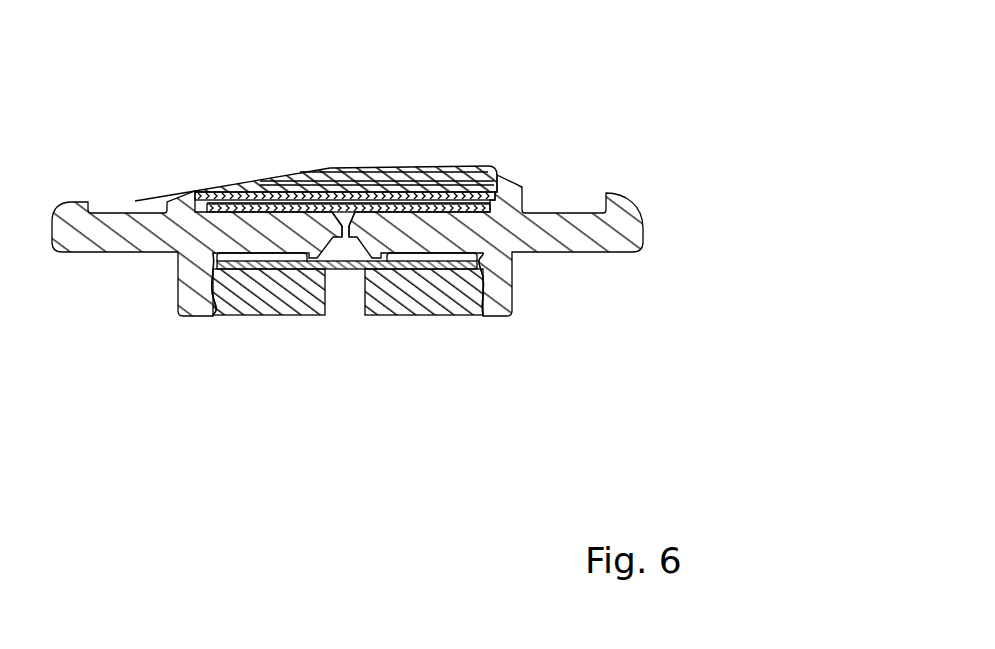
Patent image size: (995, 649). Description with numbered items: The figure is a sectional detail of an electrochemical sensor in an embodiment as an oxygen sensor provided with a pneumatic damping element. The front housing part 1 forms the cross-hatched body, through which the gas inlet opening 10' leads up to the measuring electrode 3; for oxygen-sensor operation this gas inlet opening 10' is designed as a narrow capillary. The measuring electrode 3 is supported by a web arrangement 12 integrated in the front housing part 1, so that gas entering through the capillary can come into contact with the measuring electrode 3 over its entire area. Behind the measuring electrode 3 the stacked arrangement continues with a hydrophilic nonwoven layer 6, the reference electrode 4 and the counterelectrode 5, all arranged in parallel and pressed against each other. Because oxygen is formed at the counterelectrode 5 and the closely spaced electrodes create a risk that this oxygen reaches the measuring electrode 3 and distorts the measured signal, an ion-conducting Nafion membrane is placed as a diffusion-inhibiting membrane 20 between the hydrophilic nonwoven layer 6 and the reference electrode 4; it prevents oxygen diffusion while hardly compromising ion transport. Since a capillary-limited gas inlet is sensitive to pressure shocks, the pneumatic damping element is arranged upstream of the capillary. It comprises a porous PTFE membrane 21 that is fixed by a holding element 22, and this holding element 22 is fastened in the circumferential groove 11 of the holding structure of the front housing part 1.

The front housing part 1 is at (188, 227).
The measuring electrode 3 is at (377, 258).
The reference electrode 4 is at (471, 185).
The counterelectrode 5 is at (362, 188).
The hydrophilic nonwoven layer 6 is at (430, 213).
The gas inlet opening 10' is at (312, 123).
The circumferential groove 11 is at (212, 295).
The web arrangement 12 is at (413, 188).
The diffusion-inhibiting membrane 20 is at (488, 258).
The porous PTFE membrane 21 is at (312, 261).
The holding element 22 is at (242, 298).